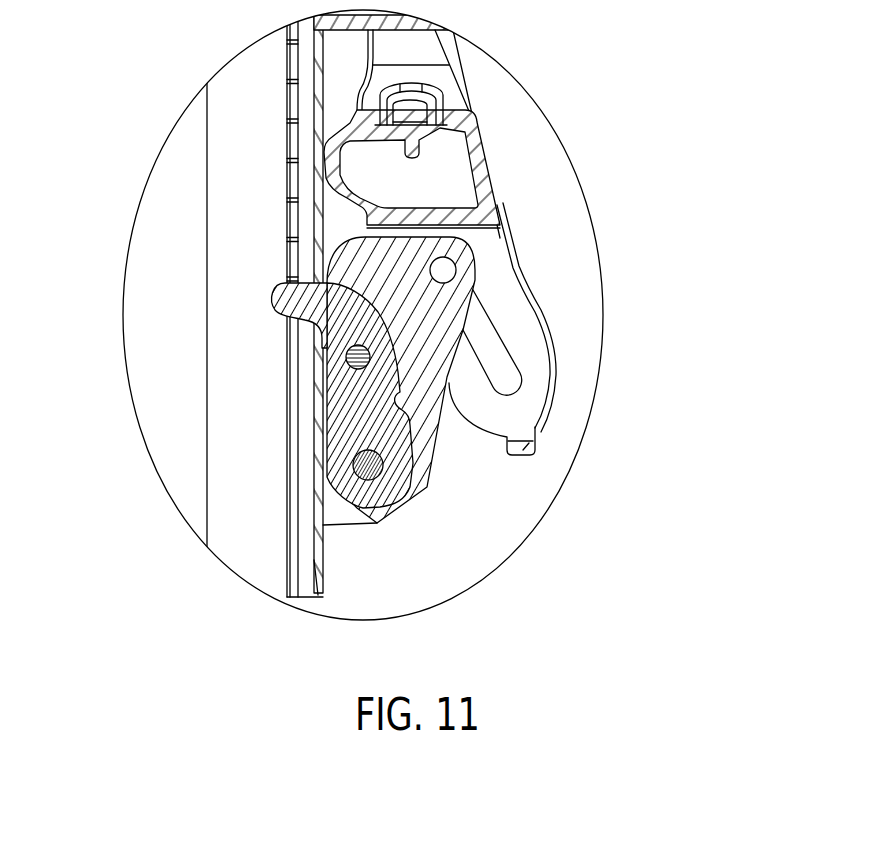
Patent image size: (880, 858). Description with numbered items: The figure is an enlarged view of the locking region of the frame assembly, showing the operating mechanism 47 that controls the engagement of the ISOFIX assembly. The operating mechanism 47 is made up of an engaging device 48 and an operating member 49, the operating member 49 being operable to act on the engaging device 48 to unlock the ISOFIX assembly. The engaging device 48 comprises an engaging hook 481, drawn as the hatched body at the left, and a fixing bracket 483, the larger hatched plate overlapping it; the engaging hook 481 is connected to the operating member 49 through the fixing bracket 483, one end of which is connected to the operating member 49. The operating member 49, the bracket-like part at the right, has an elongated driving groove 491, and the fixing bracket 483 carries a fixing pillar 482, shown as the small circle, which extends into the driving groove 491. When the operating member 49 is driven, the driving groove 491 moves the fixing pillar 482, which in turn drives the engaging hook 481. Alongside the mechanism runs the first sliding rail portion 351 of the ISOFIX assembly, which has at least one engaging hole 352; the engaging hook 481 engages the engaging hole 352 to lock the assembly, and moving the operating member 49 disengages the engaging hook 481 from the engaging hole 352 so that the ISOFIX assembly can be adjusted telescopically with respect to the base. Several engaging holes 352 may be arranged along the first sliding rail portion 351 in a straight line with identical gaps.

The first sliding rail portion 351 is at (262, 448).
The engaging hole 352 is at (279, 281).
The operating mechanism 47 is at (540, 336).
The engaging device 48 is at (518, 336).
The engaging hook 481 is at (360, 428).
The fixing pillar 482 is at (445, 268).
The fixing bracket 483 is at (509, 324).
The operating member 49 is at (576, 329).
The driving groove 491 is at (493, 352).